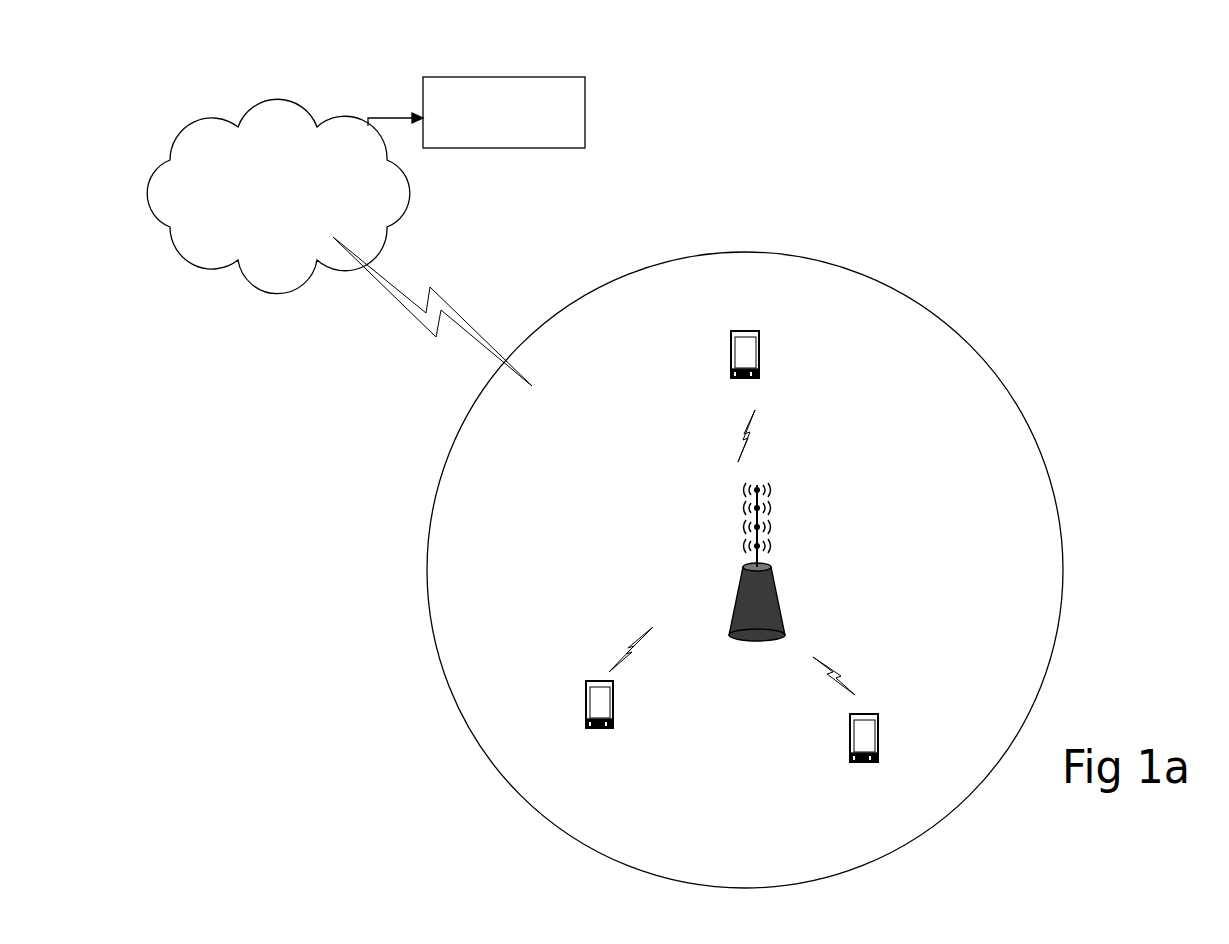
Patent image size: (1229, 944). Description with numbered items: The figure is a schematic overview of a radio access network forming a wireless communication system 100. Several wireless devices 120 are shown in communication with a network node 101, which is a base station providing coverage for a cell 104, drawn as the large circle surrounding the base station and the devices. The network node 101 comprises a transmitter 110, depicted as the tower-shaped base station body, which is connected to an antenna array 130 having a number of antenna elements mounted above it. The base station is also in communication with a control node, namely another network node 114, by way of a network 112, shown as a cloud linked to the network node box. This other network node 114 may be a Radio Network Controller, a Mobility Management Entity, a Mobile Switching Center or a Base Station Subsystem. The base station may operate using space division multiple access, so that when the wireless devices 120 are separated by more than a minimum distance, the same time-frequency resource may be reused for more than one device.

The wireless communication system 100 is at (1163, 147).
The network node 101 is at (668, 508).
The cell 104 is at (948, 322).
The transmitter 110 is at (730, 599).
The network 112 is at (283, 92).
The network node 114 is at (567, 77).
The wireless devices 120 is at (743, 330).
The antenna array 130 is at (724, 482).